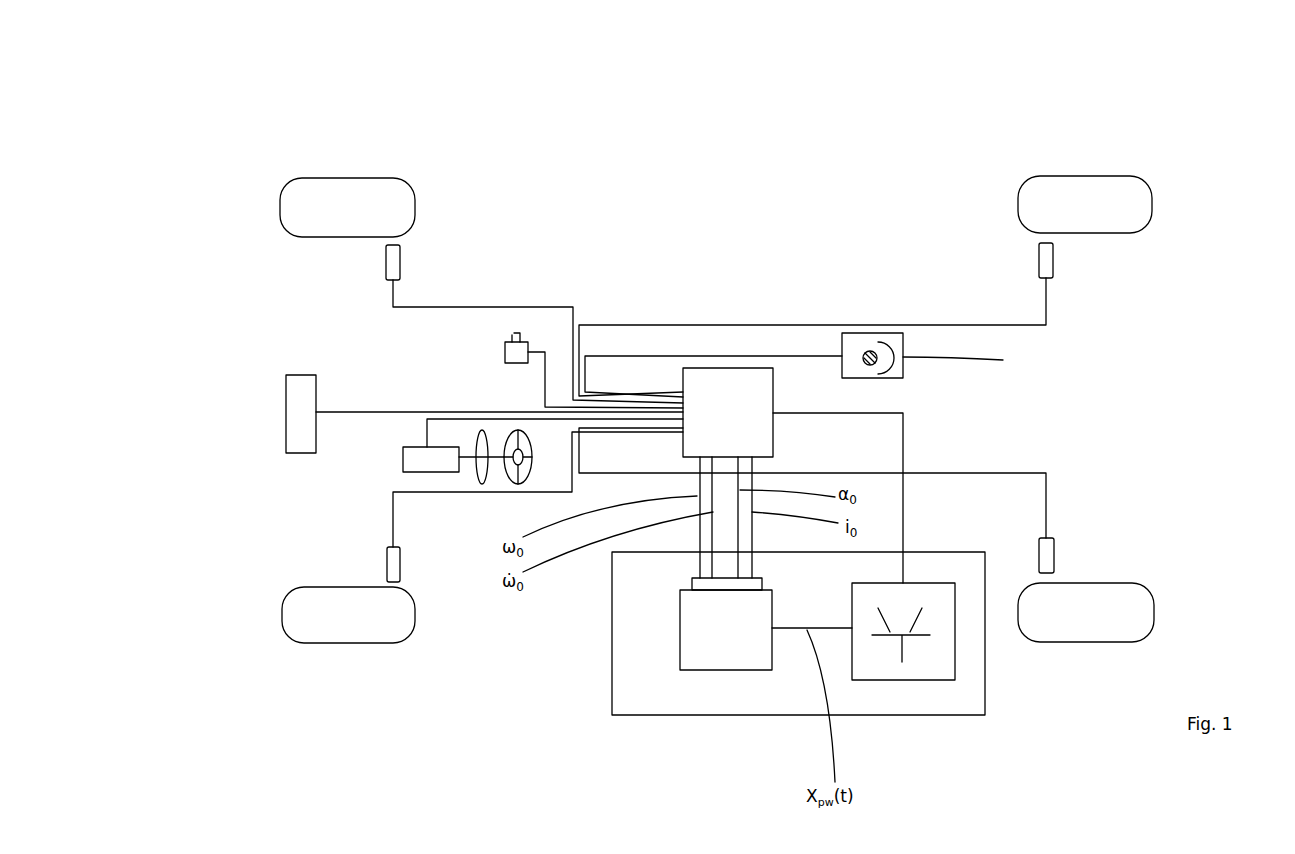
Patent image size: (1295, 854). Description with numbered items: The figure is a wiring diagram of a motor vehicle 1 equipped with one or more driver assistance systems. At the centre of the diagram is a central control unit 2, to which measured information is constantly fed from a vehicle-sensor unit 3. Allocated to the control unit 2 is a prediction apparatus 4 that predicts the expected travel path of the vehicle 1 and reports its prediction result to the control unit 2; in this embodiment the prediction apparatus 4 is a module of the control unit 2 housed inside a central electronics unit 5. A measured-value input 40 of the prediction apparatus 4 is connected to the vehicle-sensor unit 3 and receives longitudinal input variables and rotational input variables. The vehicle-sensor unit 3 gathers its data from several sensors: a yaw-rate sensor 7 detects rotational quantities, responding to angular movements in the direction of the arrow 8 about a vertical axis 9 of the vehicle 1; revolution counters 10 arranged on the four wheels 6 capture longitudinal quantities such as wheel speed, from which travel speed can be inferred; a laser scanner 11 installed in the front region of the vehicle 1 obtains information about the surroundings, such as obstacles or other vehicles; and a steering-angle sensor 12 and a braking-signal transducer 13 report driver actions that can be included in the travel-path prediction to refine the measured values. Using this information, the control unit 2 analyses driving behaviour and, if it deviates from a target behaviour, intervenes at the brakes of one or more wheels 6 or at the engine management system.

The motor vehicle 1 is at (472, 115).
The central control unit 2 is at (940, 715).
The vehicle-sensor unit 3 is at (723, 390).
The prediction apparatus 4 is at (712, 630).
The central electronics unit 5 is at (757, 715).
The wheels 6 is at (378, 213).
The yaw-rate sensor 7 is at (850, 352).
The arrow 8 is at (961, 371).
The vertical axis 9 is at (863, 352).
The revolution counters 10 is at (400, 278).
The laser scanner 11 is at (287, 420).
The steering-angle sensor 12 is at (410, 463).
The braking-signal transducer 13 is at (505, 353).
The measured-value input 40 is at (690, 593).